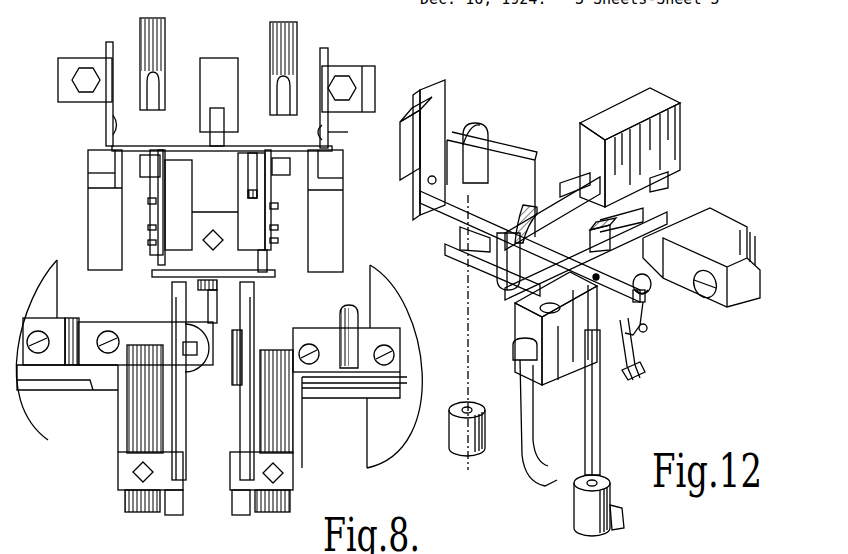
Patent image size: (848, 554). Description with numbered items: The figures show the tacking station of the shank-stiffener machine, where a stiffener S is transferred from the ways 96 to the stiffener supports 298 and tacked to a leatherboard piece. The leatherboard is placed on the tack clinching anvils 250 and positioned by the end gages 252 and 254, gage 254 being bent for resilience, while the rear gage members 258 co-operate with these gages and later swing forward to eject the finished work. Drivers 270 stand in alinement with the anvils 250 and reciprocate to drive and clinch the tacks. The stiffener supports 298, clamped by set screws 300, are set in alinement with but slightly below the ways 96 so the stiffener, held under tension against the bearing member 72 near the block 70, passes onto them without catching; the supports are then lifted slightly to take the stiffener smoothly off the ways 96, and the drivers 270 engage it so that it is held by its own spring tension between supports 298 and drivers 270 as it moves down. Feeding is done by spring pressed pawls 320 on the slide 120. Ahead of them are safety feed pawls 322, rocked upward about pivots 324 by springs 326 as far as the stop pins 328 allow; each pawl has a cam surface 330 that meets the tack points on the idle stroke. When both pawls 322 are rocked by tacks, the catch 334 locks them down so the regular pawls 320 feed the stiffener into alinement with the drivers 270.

In FIG. 8, the block 70 is at (212, 62).
In FIG. 12, the block 70 is at (612, 113).
In FIG. 8, the bearing member 72 is at (220, 115).
In FIG. 12, the bearing member 72 is at (563, 190).
In FIG. 12, the ways 96 is at (518, 160).
In FIG. 8, the slide 120 is at (245, 258).
In FIG. 8, the tack clinching anvils 250 is at (265, 412).
In FIG. 12, the tack clinching anvils 250 is at (573, 508).
In FIG. 8, the end gage 252 is at (72, 355).
In FIG. 8, the end gage 254 is at (333, 368).
In FIG. 8, the rear gage members 258 is at (244, 437).
In FIG. 12, the rear gage members 258 is at (557, 437).
In FIG. 8, the drivers 270 is at (272, 33).
In FIG. 12, the drivers 270 is at (488, 130).
In FIG. 8, the stiffener supports 298 is at (105, 120).
In FIG. 12, the stiffener supports 298 is at (438, 122).
In FIG. 8, the set screws 300 is at (88, 77).
In FIG. 8, the spring pressed pawls 320 is at (253, 172).
In FIG. 12, the spring pressed pawls 320 is at (523, 287).
In FIG. 12, the safety feed pawls 322 is at (484, 241).
In FIG. 12, the pivots 324 is at (648, 288).
In FIG. 12, the springs 326 is at (648, 362).
In FIG. 12, the stop pins 328 is at (646, 329).
In FIG. 8, the cam surface 330 is at (152, 165).
In FIG. 12, the cam surface 330 is at (492, 236).
In FIG. 8, the catch 334 is at (217, 313).
In FIG. 12, the catch 334 is at (633, 374).
In FIG. 8, the plate S is at (200, 146).